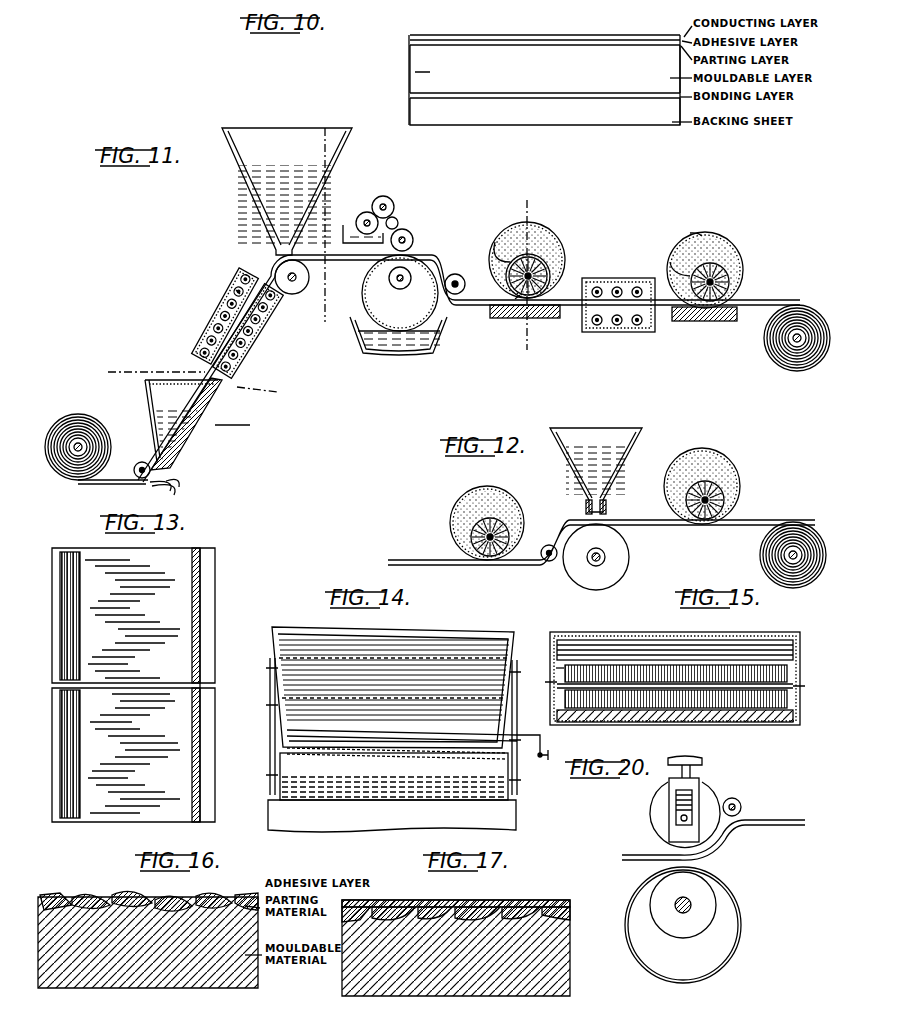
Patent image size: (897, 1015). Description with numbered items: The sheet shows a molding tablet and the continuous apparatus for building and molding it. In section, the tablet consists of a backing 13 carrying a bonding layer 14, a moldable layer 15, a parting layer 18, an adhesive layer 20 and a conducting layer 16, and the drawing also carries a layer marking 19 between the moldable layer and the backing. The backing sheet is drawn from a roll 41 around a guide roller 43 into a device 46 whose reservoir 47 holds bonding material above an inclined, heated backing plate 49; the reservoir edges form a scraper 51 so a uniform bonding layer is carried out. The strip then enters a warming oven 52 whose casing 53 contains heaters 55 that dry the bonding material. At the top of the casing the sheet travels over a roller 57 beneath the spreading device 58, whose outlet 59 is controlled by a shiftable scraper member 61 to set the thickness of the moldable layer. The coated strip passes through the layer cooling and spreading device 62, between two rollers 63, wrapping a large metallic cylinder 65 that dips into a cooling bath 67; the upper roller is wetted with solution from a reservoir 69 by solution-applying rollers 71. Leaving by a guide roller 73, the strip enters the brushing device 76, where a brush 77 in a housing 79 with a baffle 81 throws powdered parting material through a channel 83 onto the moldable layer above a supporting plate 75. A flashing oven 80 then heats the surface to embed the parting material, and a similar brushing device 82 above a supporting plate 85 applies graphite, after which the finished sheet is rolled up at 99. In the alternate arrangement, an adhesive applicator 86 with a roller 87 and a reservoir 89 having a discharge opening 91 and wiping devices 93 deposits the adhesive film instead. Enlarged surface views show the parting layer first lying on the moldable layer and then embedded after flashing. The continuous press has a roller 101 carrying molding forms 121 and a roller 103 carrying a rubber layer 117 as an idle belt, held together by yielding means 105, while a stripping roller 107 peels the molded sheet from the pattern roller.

In FIG. 10, the backing sheet 13 is at (428, 110).
In FIG. 11, the backing sheet 13 is at (120, 387).
In FIG. 20, the backing sheet 13 is at (640, 854).
In FIG. 11, the bonding layer 14 is at (346, 123).
In FIG. 10, the moldable layer 15 is at (428, 73).
In FIG. 11, the moldable layer 15 is at (538, 207).
In FIG. 16, the moldable layer 15 is at (66, 982).
In FIG. 17, the moldable layer 15 is at (555, 955).
In FIG. 10, the conducting layer 16 is at (412, 34).
In FIG. 10, the parting layer 18 is at (410, 46).
In FIG. 16, the parting layer 18 is at (46, 896).
In FIG. 17, the parting layer 18 is at (572, 916).
In FIG. 10, the bonding layer 19 is at (410, 95).
In FIG. 10, the adhesive layer 20 is at (410, 40).
In FIG. 17, the adhesive layer 20 is at (530, 902).
In FIG. 11, the roll 41 is at (78, 430).
In FIG. 11, the guide roller 43 is at (139, 461).
In FIG. 11, the bonding layer applying device 46 is at (207, 425).
In FIG. 13, the bonding layer applying device 46 is at (218, 566).
In FIG. 11, the reservoir 47 is at (149, 403).
In FIG. 13, the reservoir 47 is at (68, 563).
In FIG. 11, the backing plate 49 is at (180, 454).
In FIG. 13, the backing plate 49 is at (202, 594).
In FIG. 13, the scraper 51 is at (188, 562).
In FIG. 11, the warming oven 52 is at (233, 289).
In FIG. 11, the casing 53 is at (218, 308).
In FIG. 14, the casing 53 is at (314, 820).
In FIG. 11, the heaters 55 is at (255, 355).
In FIG. 11, the roller 57 is at (311, 275).
In FIG. 14, the roller 57 is at (388, 782).
In FIG. 11, the spreading device 58 is at (284, 162).
In FIG. 14, the spreading device 58 is at (455, 626).
In FIG. 11, the outlet 59 is at (280, 255).
In FIG. 14, the scraper member 61 is at (442, 746).
In FIG. 11, the layer cooling and spreading device 62 is at (412, 231).
In FIG. 11, the rollers 63 is at (414, 242).
In FIG. 11, the metallic cylinder 65 is at (362, 296).
In FIG. 11, the cooling bath 67 is at (390, 352).
In FIG. 11, the reservoir 69 is at (358, 219).
In FIG. 11, the solution-applying rollers 71 is at (384, 196).
In FIG. 11, the guide roller 73 is at (455, 274).
In FIG. 11, the supporting plate 75 is at (498, 319).
In FIG. 11, the brushing device 76 is at (548, 234).
In FIG. 12, the brushing device 76 is at (462, 492).
In FIG. 15, the brushing device 76 is at (650, 638).
In FIG. 11, the brush 77 is at (540, 265).
In FIG. 12, the brush 77 is at (505, 527).
In FIG. 15, the brush 77 is at (760, 712).
In FIG. 11, the housing 79 is at (552, 272).
In FIG. 15, the housing 79 is at (798, 710).
In FIG. 11, the flashing oven 80 is at (608, 280).
In FIG. 11, the baffle 81 is at (494, 243).
In FIG. 15, the baffle 81 is at (800, 654).
In FIG. 11, the brushing device 82 is at (728, 240).
In FIG. 12, the brushing device 82 is at (728, 458).
In FIG. 15, the brushing device 82 is at (768, 636).
In FIG. 11, the channel 83 is at (512, 296).
In FIG. 12, the channel 83 is at (730, 495).
In FIG. 15, the channel 83 is at (548, 668).
In FIG. 11, the supporting plate 85 is at (706, 321).
In FIG. 12, the adhesive applicator 86 is at (560, 572).
In FIG. 11, the roller 87 is at (687, 224).
In FIG. 12, the roller 87 is at (585, 583).
In FIG. 11, the reservoir 89 is at (670, 262).
In FIG. 12, the reservoir 89 is at (596, 442).
In FIG. 12, the discharge opening 91 is at (584, 505).
In FIG. 12, the brushing or wiping devices 93 is at (606, 505).
In FIG. 11, the roll 99 is at (798, 305).
In FIG. 12, the roll 99 is at (793, 555).
In FIG. 20, the roller 101 is at (670, 815).
In FIG. 20, the roller 103 is at (700, 890).
In FIG. 20, the yielding means 105 is at (704, 760).
In FIG. 20, the stripping roller 107 is at (743, 804).
In FIG. 20, the rubber layer 117 is at (640, 948).
In FIG. 20, the molding forms 121 is at (712, 791).